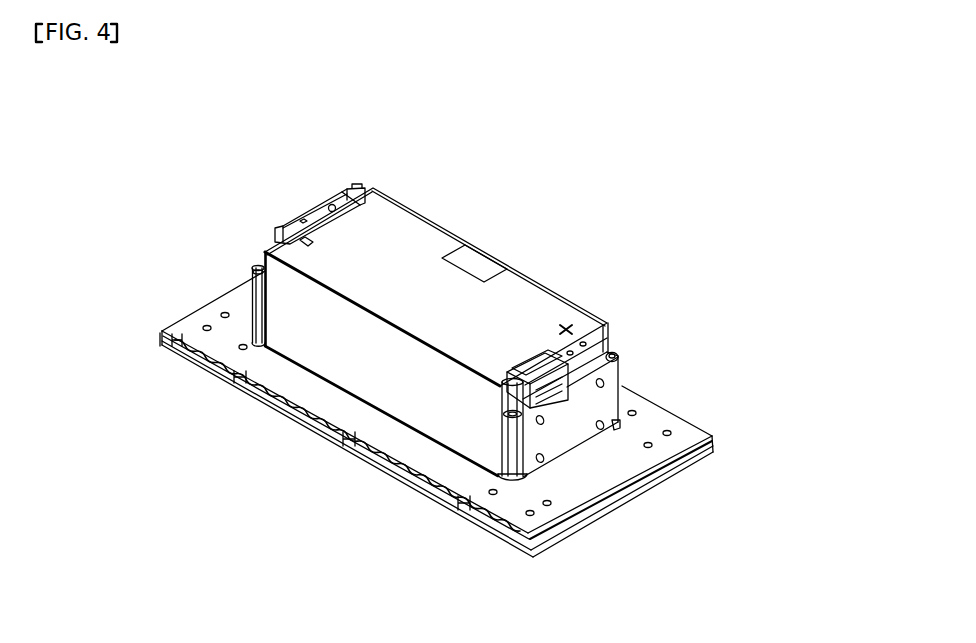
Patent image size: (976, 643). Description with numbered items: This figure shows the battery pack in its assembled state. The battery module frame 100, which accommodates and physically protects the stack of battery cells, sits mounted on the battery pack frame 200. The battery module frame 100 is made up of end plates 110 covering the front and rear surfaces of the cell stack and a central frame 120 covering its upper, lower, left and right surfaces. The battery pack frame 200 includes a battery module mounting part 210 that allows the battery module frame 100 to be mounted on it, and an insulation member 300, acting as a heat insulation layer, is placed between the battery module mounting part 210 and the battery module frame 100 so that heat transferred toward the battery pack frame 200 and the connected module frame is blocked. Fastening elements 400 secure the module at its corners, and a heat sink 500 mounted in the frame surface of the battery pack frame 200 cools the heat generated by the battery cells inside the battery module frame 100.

The battery module frame 100 is at (516, 246).
The end plate 110 is at (613, 380).
The central frame 120 is at (557, 297).
The battery pack frame 200 is at (327, 453).
The battery module mounting part 210 is at (258, 338).
The insulation member 300 is at (253, 334).
The fastening member 400 is at (255, 267).
The heat sink 500 is at (285, 411).